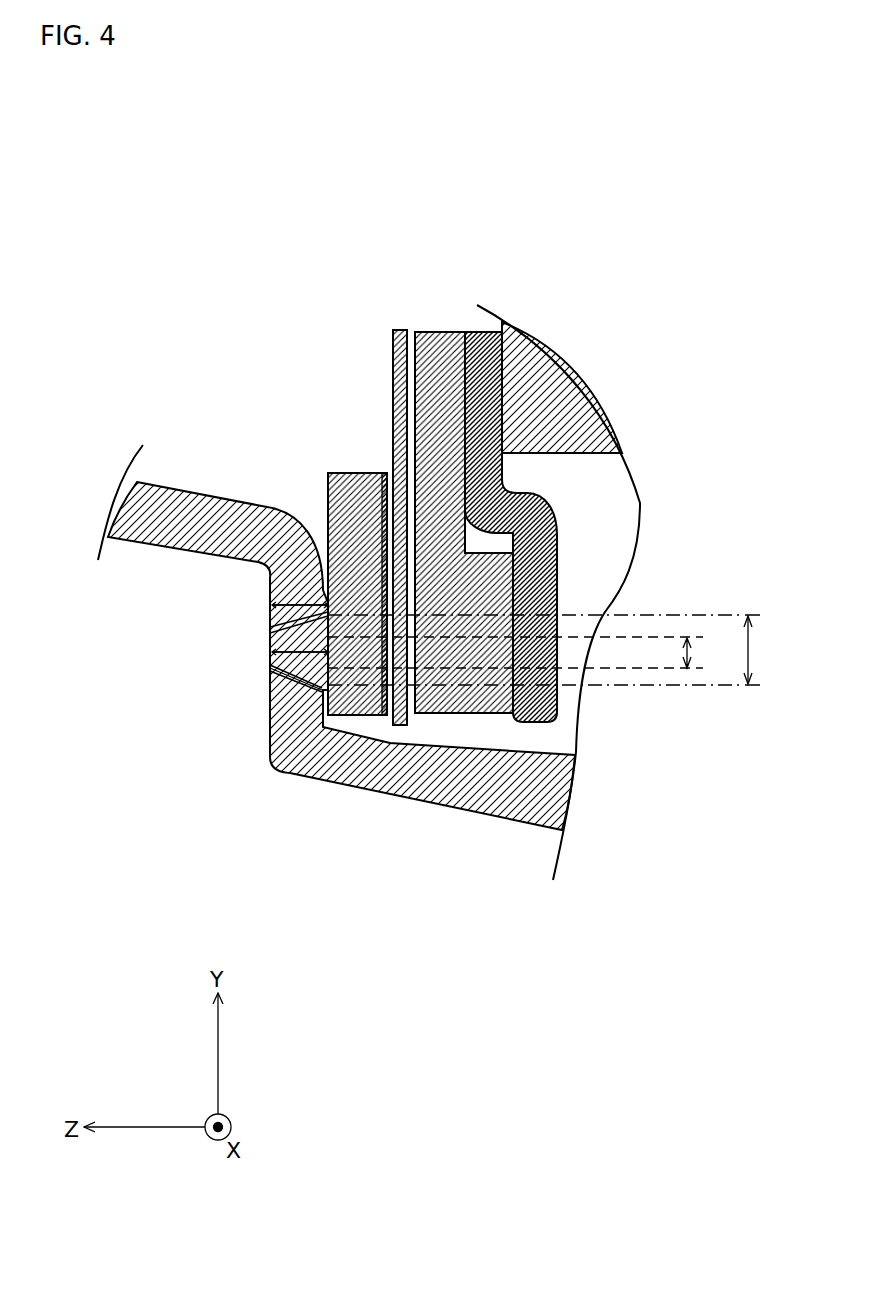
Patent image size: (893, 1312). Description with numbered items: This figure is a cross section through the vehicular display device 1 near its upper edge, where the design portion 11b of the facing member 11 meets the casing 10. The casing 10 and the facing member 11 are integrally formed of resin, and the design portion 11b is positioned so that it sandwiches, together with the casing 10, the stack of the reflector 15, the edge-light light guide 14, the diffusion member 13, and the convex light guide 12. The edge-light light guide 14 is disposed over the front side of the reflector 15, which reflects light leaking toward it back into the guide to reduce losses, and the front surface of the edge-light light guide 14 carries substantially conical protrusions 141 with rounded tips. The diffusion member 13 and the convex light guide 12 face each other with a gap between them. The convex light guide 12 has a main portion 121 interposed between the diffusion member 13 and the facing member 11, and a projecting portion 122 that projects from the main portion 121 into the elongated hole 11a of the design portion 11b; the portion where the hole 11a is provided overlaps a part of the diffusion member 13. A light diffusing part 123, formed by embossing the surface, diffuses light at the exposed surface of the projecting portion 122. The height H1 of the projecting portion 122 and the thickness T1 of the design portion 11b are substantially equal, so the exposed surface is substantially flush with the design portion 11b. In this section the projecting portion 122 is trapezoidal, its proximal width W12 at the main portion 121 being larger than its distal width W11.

The vehicular display device 1 is at (505, 280).
The casing 10 is at (555, 420).
The facing member 11 is at (201, 492).
The hole 11a is at (270, 668).
The design portion 11b is at (272, 603).
The convex light guide 12 is at (252, 710).
The main portion 121 is at (362, 693).
The projecting portion 122 is at (307, 683).
The light diffusing part 123 is at (272, 657).
The diffusion member 13 is at (394, 725).
The edge-light light guide 14 is at (467, 700).
The protrusions 141 is at (385, 480).
The reflector 15 is at (477, 395).
The height of the projecting portion H1 is at (272, 637).
The thickness of the design portion T1 is at (322, 603).
The width of the distal end portion W11 is at (515, 652).
The width of the proximal end portion W12 is at (571, 650).